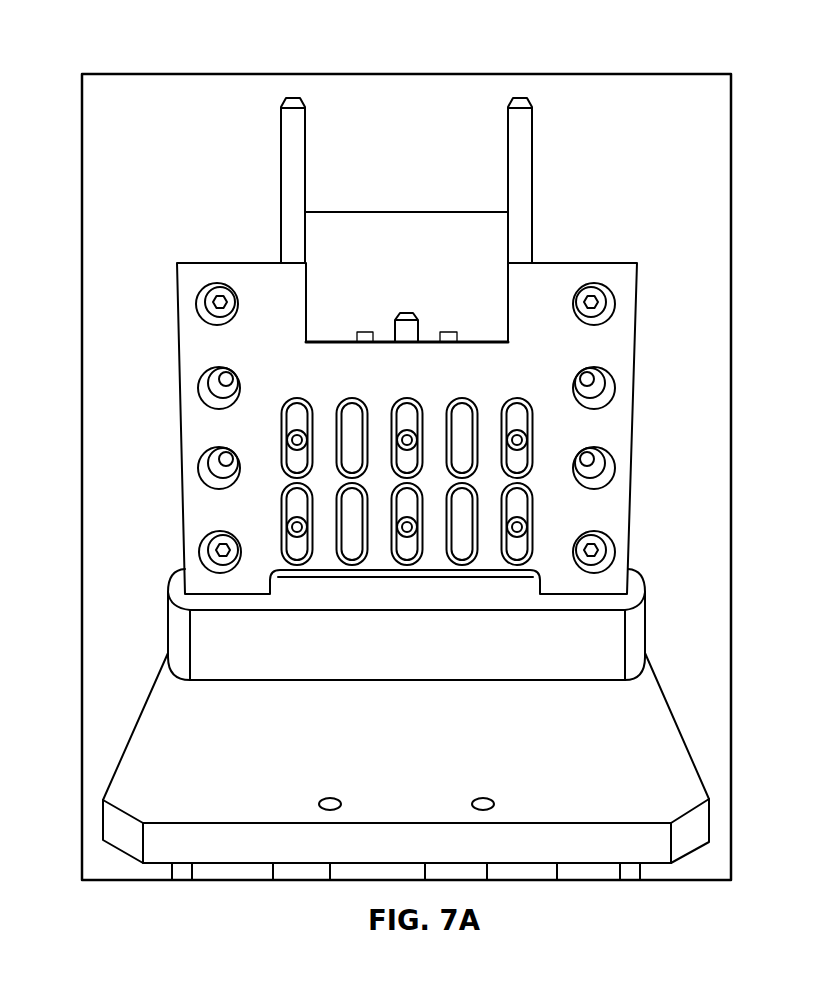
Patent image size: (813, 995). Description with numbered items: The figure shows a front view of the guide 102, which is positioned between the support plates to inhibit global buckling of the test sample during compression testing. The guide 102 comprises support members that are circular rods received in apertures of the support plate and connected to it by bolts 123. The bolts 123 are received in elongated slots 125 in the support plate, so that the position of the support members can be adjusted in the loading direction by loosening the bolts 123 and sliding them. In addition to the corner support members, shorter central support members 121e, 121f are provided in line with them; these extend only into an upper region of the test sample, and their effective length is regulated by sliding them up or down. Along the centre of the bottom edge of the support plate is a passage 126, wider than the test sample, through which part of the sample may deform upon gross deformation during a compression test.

The guide 102 is at (634, 185).
The central support member 121e is at (408, 328).
The central support member 121f is at (432, 310).
The bolt 123 is at (520, 526).
The elongated slot 125 is at (297, 467).
The passage 126 is at (423, 584).